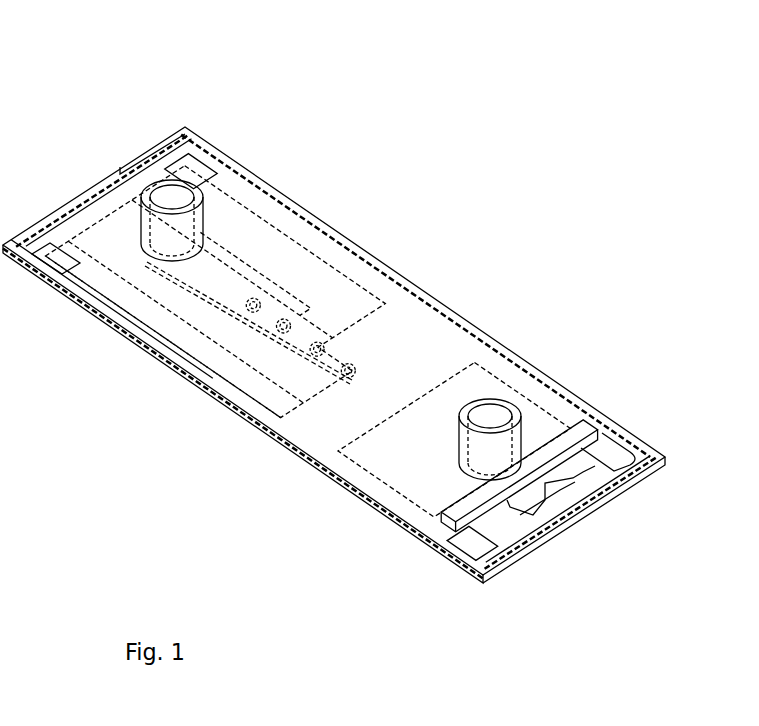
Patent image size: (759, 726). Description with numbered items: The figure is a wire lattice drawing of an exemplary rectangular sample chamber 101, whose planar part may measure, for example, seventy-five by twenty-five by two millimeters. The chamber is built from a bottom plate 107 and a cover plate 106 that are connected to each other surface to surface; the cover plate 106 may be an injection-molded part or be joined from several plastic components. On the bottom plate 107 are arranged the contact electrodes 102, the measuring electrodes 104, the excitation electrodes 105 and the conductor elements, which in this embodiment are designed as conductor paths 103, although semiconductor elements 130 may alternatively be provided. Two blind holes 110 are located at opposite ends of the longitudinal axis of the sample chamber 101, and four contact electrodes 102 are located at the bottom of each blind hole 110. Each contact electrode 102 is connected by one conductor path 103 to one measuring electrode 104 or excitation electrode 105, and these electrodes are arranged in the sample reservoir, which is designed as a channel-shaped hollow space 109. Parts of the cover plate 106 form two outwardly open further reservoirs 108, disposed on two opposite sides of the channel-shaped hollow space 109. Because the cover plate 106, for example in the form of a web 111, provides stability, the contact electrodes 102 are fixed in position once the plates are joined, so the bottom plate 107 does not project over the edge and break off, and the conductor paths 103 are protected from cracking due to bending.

The sample chamber 101 is at (290, 222).
The contact electrode 102 is at (70, 205).
The conductor path 103 is at (337, 270).
The semiconductor element 130 is at (371, 263).
The measuring electrode 104 is at (330, 378).
The excitation electrode 105 is at (330, 440).
The cover plate 106 is at (138, 308).
The bottom plate 107 is at (163, 363).
The further reservoir 108 is at (200, 180).
The channel-shaped hollow space 109 is at (228, 300).
The blind hole 110 is at (184, 129).
The web 111 is at (533, 558).